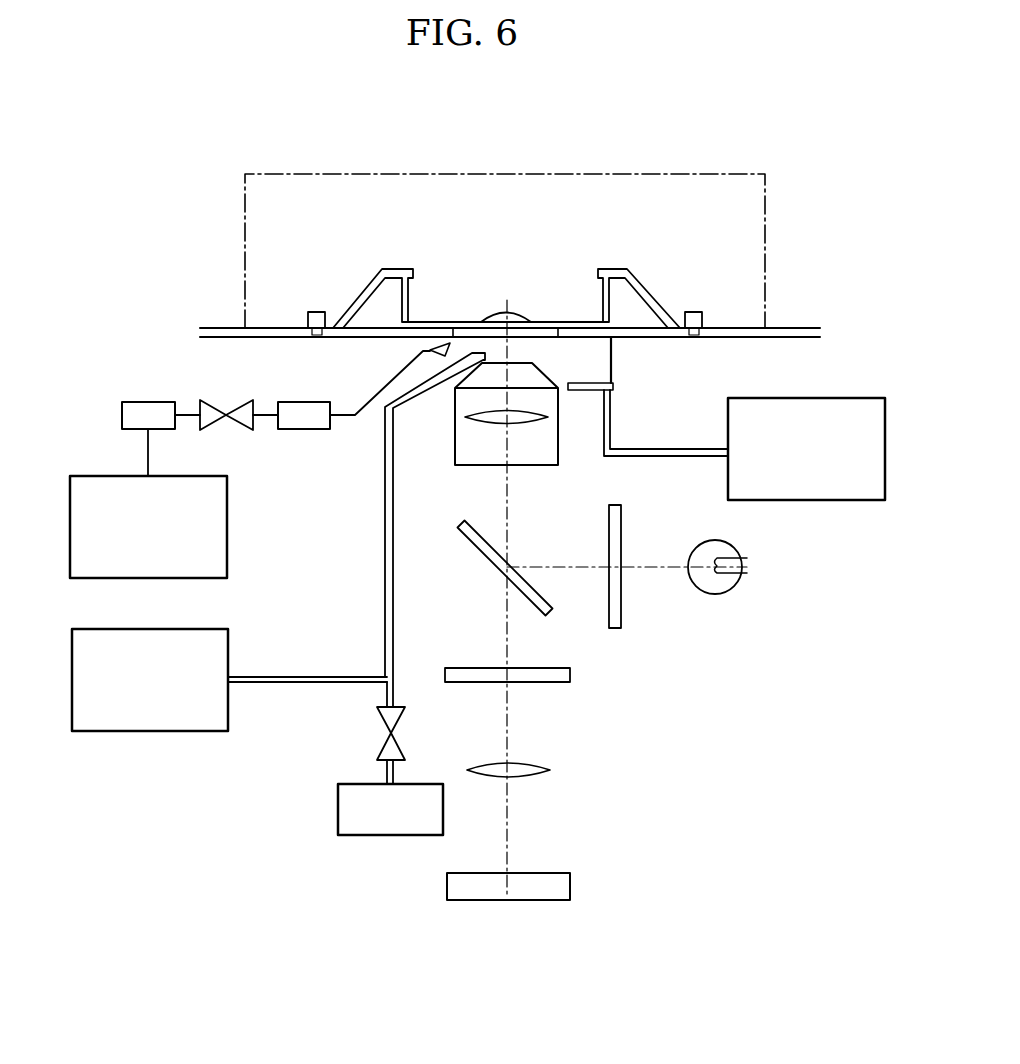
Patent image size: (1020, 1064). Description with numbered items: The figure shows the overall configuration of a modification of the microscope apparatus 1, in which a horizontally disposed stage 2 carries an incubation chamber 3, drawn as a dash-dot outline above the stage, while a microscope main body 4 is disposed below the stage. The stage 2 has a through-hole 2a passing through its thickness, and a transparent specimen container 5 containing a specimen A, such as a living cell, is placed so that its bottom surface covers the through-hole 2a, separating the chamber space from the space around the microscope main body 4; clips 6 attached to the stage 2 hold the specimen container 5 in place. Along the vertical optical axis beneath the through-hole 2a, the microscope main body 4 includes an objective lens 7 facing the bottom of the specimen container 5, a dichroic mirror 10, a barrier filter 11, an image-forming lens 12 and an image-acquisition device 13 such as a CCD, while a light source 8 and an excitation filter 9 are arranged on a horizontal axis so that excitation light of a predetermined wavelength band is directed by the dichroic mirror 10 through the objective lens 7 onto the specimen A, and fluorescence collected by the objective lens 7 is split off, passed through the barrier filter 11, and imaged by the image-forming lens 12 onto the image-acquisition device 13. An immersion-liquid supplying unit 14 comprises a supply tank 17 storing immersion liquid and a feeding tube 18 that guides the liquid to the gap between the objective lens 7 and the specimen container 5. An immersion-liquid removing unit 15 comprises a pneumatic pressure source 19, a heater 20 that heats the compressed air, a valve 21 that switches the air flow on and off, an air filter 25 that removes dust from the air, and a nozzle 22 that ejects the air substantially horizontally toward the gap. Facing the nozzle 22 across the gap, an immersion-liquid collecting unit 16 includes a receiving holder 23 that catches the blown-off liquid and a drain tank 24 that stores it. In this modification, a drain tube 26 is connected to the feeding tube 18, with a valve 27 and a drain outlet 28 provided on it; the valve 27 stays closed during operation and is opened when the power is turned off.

The microscope apparatus 1 is at (160, 150).
The stage 2 is at (213, 328).
The through-hole 2a is at (462, 328).
The incubation chamber 3 is at (347, 174).
The microscope main body 4 is at (700, 785).
The specimen container 5 is at (605, 300).
The clips 6 is at (355, 300).
The objective lens 7 is at (520, 425).
The light source 8 is at (715, 594).
The excitation filter 9 is at (615, 628).
The dichroic mirror 10 is at (483, 548).
The barrier filter 11 is at (540, 682).
The image-forming lens 12 is at (550, 770).
The image-acquisition device 13 is at (570, 886).
The immersion-liquid supplying unit 14 is at (262, 785).
The immersion-liquid removing unit 15 is at (170, 355).
The immersion-liquid collecting unit 16 is at (820, 375).
The supply tank 17 is at (158, 731).
The feeding tube 18 is at (387, 610).
The pneumatic pressure source 19 is at (227, 555).
The heater 20 is at (122, 410).
The valve 21 is at (226, 410).
The nozzle 22 is at (440, 345).
The receiving holder 23 is at (613, 362).
The drain tank 24 is at (830, 500).
The air filter 25 is at (303, 429).
The drain tube 26 is at (395, 690).
The valve 27 is at (378, 730).
The drain outlet 28 is at (390, 835).
The specimen A is at (510, 318).